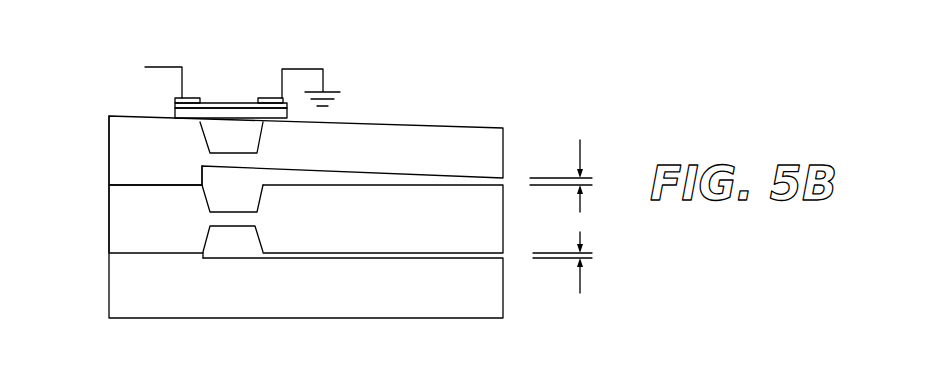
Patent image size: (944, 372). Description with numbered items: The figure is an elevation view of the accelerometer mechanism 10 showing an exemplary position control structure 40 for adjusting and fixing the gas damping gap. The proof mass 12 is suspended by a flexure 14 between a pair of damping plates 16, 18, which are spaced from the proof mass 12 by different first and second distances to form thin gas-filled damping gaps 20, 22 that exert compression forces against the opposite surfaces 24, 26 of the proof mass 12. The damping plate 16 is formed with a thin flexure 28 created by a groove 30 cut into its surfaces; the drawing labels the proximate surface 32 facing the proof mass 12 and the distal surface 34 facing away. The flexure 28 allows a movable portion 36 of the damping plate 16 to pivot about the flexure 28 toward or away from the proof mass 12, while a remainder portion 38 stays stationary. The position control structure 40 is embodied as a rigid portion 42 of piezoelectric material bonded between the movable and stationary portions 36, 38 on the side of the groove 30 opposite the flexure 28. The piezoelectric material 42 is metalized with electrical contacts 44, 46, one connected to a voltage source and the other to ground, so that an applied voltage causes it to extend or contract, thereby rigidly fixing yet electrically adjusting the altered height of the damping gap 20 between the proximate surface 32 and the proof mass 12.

The accelerometer mechanism 10 is at (566, 99).
The proof mass 12 is at (394, 230).
The flexure 14 is at (246, 217).
The damping plate 16 is at (109, 142).
The damping plate 18 is at (109, 282).
The damping gap 20 is at (516, 182).
The damping gap 22 is at (516, 258).
The surface of proof mass 24 is at (477, 177).
The surface of proof mass 26 is at (422, 254).
The flexure 28 is at (244, 158).
The groove 30 is at (248, 118).
The proximate surface 32 is at (346, 170).
The distal surface 34 is at (428, 125).
The movable portion 36 is at (400, 164).
The remainder portion 38 is at (161, 160).
The position control structure 40 is at (221, 86).
The rigid portion 42 is at (175, 112).
The electrical contact 44 is at (190, 98).
The electrical contact 46 is at (272, 98).